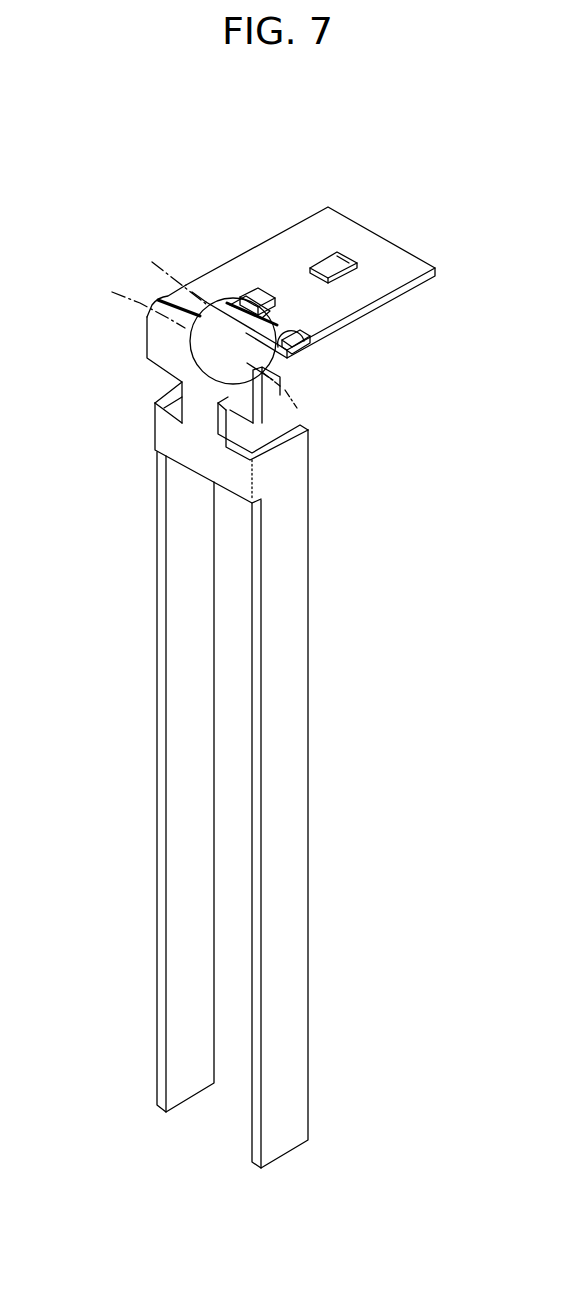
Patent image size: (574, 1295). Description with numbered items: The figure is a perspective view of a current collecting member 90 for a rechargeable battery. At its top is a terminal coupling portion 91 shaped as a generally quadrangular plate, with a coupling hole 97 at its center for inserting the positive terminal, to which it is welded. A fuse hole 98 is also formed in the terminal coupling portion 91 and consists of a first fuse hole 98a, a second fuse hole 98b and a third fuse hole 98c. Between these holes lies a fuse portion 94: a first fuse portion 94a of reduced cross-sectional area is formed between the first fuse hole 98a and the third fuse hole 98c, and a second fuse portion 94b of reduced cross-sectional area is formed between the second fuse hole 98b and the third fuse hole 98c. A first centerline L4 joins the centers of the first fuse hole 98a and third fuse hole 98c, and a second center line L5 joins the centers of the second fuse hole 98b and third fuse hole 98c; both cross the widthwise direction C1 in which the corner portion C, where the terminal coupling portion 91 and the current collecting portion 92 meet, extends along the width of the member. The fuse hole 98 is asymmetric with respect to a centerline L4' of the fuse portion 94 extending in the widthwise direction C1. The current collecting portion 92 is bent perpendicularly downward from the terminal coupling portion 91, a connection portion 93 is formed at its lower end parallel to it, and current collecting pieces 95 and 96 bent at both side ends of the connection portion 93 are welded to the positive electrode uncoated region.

The current collecting member 90 is at (415, 242).
The terminal coupling portion 91 is at (320, 230).
The current collecting portion 92 is at (150, 336).
The connection portion 93 is at (198, 455).
The fuse portion 94 is at (227, 184).
The first fuse portion 94a is at (264, 313).
The second fuse portion 94b is at (228, 298).
The current collecting piece 95 is at (290, 702).
The current collecting piece 96 is at (160, 630).
The coupling hole 97 is at (346, 259).
The fuse hole 98 is at (442, 326).
The first fuse hole 98a is at (232, 382).
The second fuse hole 98b is at (280, 346).
The third fuse hole 98c is at (270, 313).
The corner portion C is at (180, 338).
The widthwise direction C1 is at (307, 400).
The first centerline L4 is at (132, 280).
The centerline of the fuse portion L4' is at (147, 236).
The second center line L5 is at (293, 408).